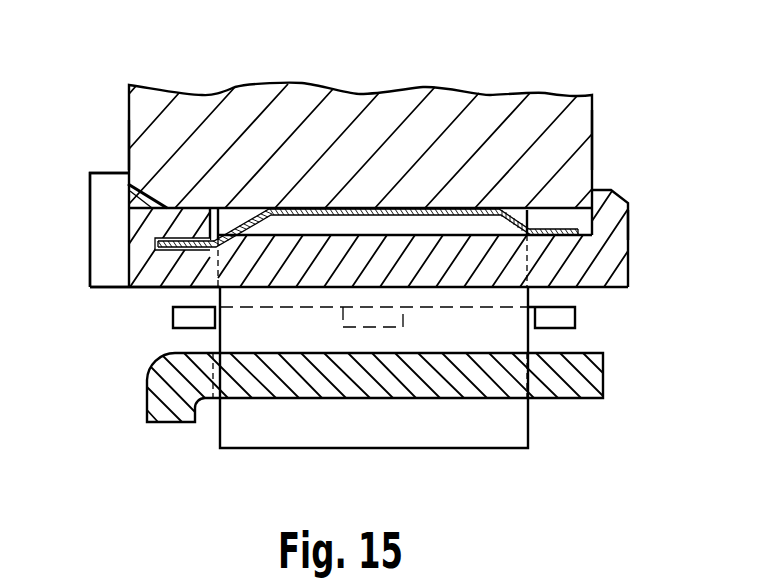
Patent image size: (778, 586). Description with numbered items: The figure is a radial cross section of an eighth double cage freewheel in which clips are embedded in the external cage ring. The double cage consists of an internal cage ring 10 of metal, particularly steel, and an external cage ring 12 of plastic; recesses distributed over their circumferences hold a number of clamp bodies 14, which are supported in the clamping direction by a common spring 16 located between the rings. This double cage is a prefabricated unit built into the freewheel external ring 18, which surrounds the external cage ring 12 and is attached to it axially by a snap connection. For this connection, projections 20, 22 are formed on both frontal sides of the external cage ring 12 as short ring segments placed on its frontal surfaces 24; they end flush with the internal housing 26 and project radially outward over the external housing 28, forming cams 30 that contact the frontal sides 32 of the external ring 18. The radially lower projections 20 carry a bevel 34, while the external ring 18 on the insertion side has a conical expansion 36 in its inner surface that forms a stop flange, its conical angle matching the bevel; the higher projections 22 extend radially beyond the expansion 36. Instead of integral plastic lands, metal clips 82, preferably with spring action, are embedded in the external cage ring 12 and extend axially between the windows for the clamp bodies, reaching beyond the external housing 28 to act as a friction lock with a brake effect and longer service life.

The internal cage ring 10 is at (578, 377).
The external cage ring 12 is at (352, 257).
The clamp bodies 14 is at (495, 435).
The spring 16 is at (560, 320).
The freewheel external ring 18 is at (425, 123).
The projections 20 is at (615, 268).
The projections 22 is at (105, 271).
The frontal surfaces 24 is at (128, 235).
The internal housing 26 is at (148, 289).
The external housing 28 is at (295, 205).
The cams 30 is at (108, 180).
The frontal sides 32 is at (128, 122).
The bevel 34 is at (622, 191).
The conical expansion 36 is at (139, 192).
The clips 82 is at (518, 247).